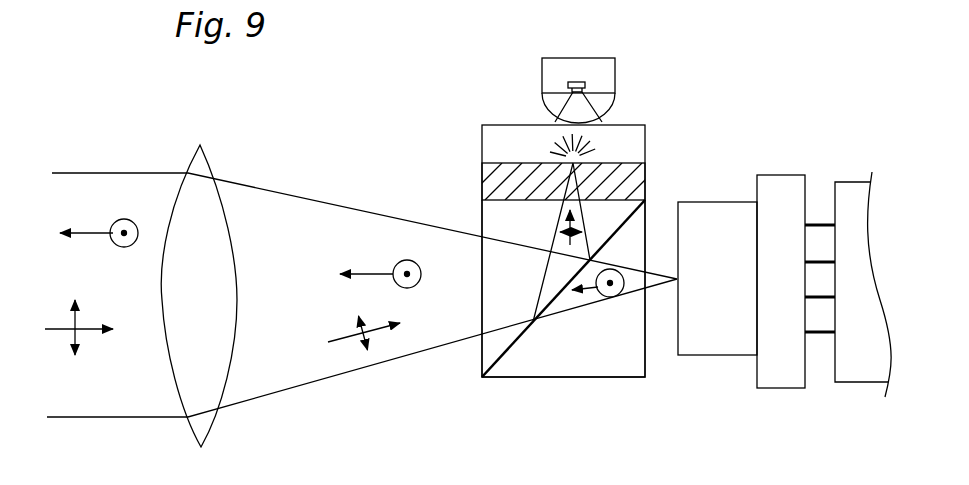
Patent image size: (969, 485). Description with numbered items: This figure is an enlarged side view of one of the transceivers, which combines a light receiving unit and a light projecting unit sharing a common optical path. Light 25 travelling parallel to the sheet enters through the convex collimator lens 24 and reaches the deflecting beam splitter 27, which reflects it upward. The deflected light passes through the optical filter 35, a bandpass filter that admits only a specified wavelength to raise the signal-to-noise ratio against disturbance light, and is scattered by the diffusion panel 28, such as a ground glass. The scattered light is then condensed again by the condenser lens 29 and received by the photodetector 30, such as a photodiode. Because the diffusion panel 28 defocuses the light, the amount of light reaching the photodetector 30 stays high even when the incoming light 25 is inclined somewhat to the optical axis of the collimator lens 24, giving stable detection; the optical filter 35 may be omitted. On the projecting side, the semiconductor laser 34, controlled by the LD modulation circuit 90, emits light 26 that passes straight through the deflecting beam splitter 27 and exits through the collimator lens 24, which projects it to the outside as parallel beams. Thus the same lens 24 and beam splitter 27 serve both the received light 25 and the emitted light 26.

The convex collimator lens 24 is at (215, 368).
The light 25 is at (86, 337).
The light 26 is at (87, 232).
The deflecting beam splitter 27 is at (578, 378).
The diffusion panel 28 is at (633, 188).
The condenser lens 29 is at (597, 104).
The photodetector 30 is at (585, 84).
The semiconductor laser 34 is at (727, 332).
The optical filter 35 is at (517, 146).
The LD modulation circuit 90 is at (857, 368).